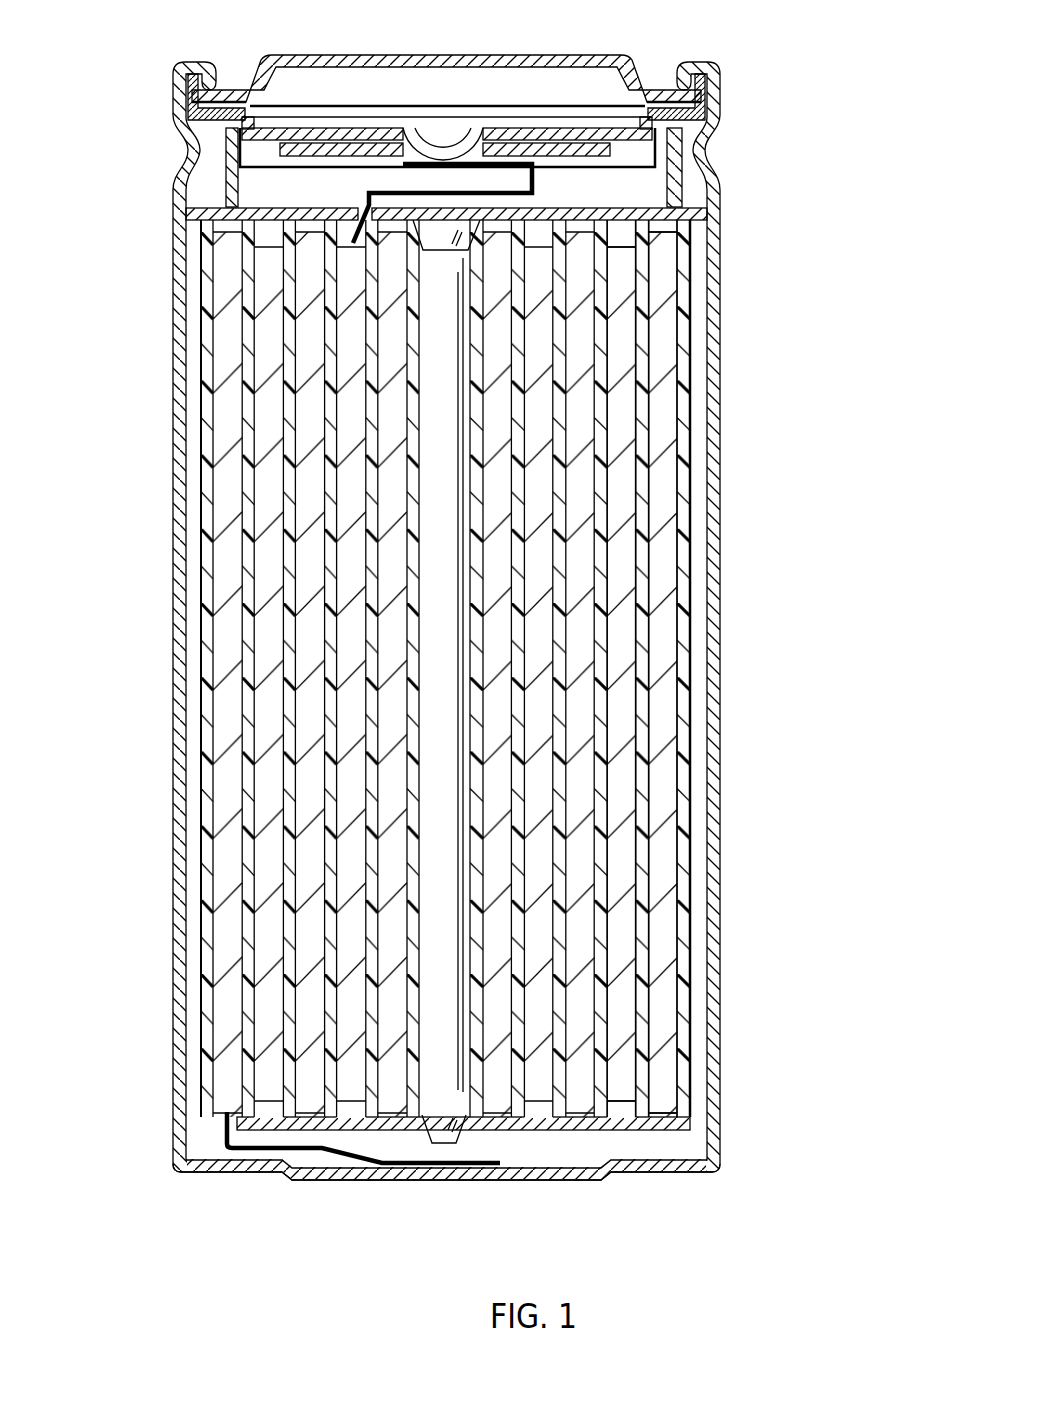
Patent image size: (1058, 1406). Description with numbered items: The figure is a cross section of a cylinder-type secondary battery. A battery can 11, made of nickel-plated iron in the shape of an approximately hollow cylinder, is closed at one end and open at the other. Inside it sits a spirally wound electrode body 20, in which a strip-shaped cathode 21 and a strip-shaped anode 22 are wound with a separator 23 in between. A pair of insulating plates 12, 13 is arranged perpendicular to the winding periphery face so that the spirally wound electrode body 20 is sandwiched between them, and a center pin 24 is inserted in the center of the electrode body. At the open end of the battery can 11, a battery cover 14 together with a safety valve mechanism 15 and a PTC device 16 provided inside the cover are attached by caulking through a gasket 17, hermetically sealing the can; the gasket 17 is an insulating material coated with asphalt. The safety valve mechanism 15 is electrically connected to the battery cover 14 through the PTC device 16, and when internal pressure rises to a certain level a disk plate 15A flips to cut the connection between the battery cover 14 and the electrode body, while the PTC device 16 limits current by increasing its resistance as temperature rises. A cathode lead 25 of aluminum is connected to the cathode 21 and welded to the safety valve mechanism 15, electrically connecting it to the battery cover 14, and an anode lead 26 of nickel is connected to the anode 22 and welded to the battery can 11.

The battery can 11 is at (720, 276).
The insulating plate 12 is at (704, 214).
The insulating plate 13 is at (702, 1122).
The battery cover 14 is at (407, 55).
The safety valve mechanism 15 is at (475, 86).
The disk plate 15A is at (586, 110).
The PTC device 16 is at (706, 111).
The gasket 17 is at (683, 187).
The spirally wound electrode body 20 is at (494, 669).
The cathode 21 is at (627, 498).
The anode 22 is at (663, 560).
The separator 23 is at (640, 636).
The center pin 24 is at (445, 683).
The cathode lead 25 is at (412, 158).
The anode lead 26 is at (334, 1150).